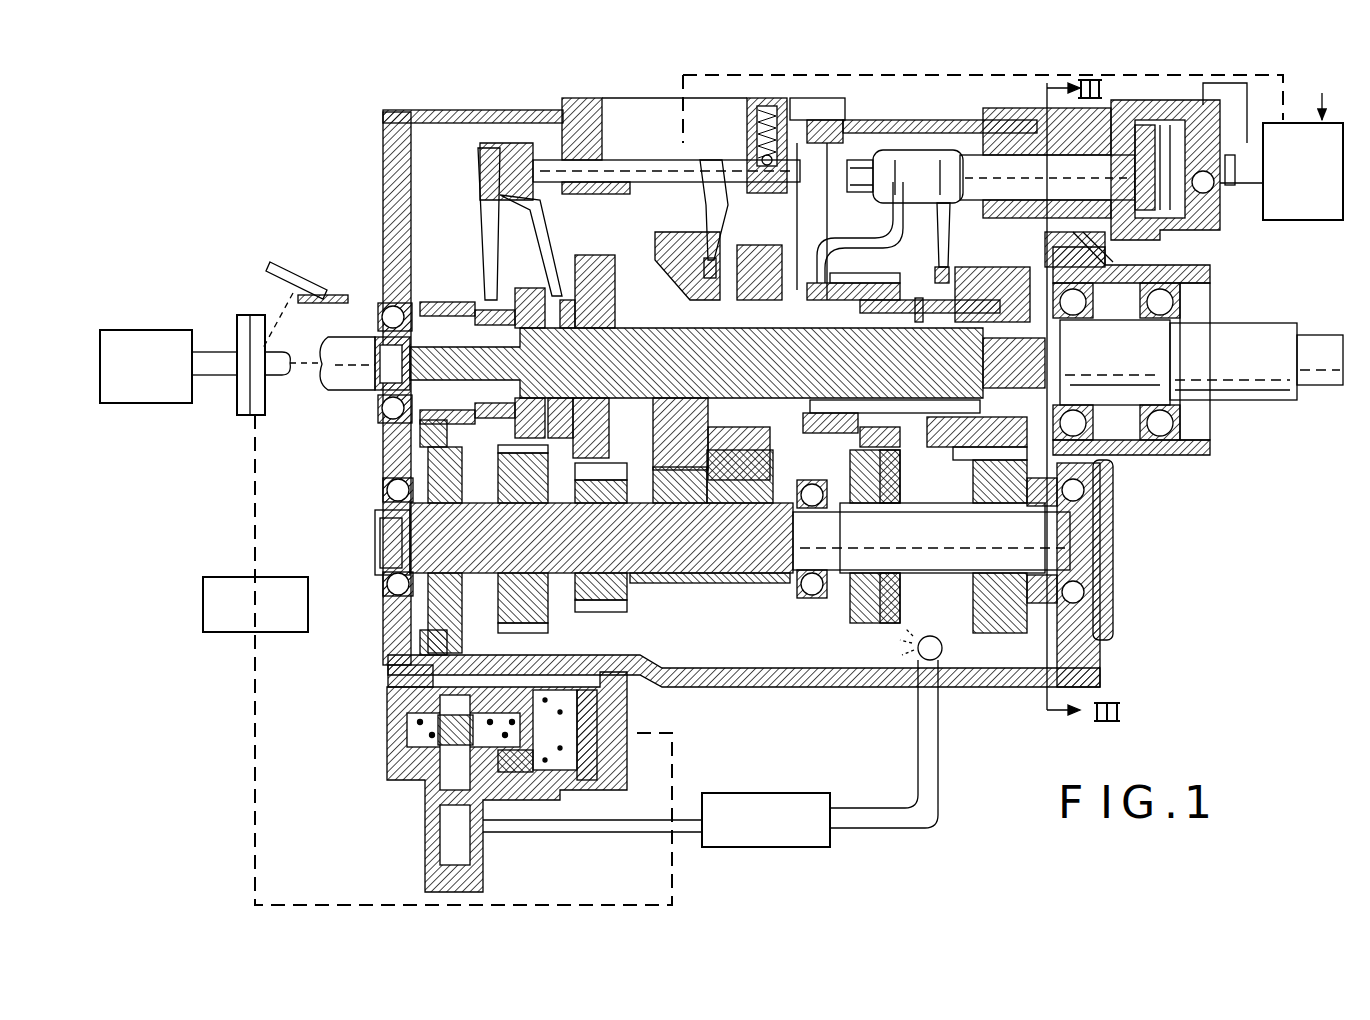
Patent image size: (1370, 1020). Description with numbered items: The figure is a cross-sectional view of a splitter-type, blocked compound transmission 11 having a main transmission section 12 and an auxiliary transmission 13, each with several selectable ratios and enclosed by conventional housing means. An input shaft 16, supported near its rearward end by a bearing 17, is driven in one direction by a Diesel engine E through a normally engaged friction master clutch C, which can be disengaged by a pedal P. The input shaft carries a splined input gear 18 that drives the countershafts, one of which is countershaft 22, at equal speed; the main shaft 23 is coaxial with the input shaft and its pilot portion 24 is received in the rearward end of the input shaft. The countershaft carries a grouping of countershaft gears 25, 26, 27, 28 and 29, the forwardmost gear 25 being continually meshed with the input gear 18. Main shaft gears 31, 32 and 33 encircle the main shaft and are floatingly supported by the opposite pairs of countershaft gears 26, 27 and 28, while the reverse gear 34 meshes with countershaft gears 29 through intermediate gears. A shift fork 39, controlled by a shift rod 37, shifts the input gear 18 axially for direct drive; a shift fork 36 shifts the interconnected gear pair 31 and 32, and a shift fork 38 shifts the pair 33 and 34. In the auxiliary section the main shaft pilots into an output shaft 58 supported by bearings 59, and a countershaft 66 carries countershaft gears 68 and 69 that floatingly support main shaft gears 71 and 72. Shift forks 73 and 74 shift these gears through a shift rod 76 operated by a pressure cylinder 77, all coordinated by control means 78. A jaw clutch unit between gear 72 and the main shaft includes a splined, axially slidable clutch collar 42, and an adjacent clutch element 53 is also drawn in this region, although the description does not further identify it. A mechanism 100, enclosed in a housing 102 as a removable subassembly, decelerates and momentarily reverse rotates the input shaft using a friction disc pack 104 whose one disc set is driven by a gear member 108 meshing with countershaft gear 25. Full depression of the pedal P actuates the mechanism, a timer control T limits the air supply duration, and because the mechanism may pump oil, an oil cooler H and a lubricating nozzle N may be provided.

The blocked transmission 11 is at (358, 149).
The main transmission section 12 is at (449, 114).
The auxiliary transmission 13 is at (895, 124).
The input shaft 16 is at (349, 344).
The bearing 17 is at (382, 303).
The input gear 18 is at (453, 300).
The countershaft 22 is at (380, 536).
The main shaft 23 is at (670, 395).
The pilot portion 24 is at (405, 366).
The countershaft gear 25 is at (464, 642).
The countershaft gear 26 is at (520, 632).
The countershaft gear 27 is at (595, 605).
The countershaft gear 28 is at (700, 582).
The countershaft gear 29 is at (790, 580).
The main shaft gear 31 is at (531, 288).
The main shaft gear 32 is at (582, 256).
The main shaft gear 33 is at (672, 230).
The reverse gear 34 is at (758, 246).
The shift fork 36 is at (538, 232).
The shift rod 37 is at (552, 158).
The shift fork 38 is at (716, 215).
The shift fork 39 is at (480, 234).
The clutch collar 42 is at (917, 296).
The clutch plate 53 is at (900, 268).
The output shaft 58 is at (1258, 336).
The bearings 59 is at (1195, 293).
The countershaft 66 is at (936, 506).
The countershaft gear 68 is at (870, 632).
The countershaft gear 69 is at (985, 604).
The main shaft gear 71 is at (864, 282).
The main shaft gear 72 is at (1004, 268).
The shift fork 73 is at (860, 232).
The shift fork 74 is at (946, 236).
The shift rod 76 is at (990, 168).
The pressure cylinder 77 is at (1185, 216).
The control means 78 is at (1320, 210).
The mechanism 100 is at (384, 752).
The housing 102 is at (585, 778).
The friction disc pack 104 is at (518, 785).
The member 108 is at (405, 676).
The Diesel engine E is at (165, 326).
The friction master clutch C is at (245, 315).
The pedal P is at (296, 264).
The timer control T is at (225, 576).
The oil cooler H is at (794, 800).
The nozzle N is at (942, 648).